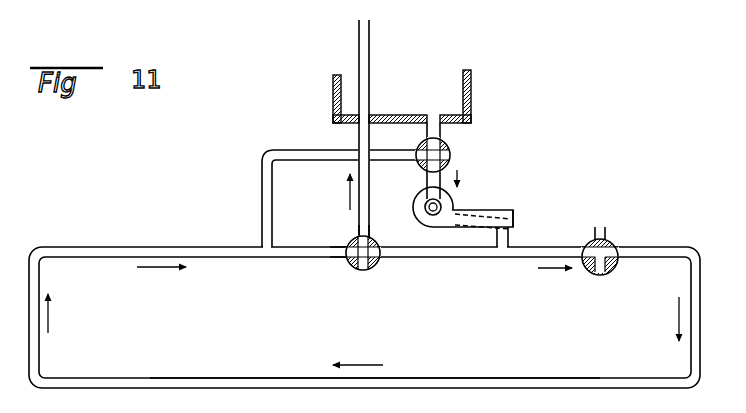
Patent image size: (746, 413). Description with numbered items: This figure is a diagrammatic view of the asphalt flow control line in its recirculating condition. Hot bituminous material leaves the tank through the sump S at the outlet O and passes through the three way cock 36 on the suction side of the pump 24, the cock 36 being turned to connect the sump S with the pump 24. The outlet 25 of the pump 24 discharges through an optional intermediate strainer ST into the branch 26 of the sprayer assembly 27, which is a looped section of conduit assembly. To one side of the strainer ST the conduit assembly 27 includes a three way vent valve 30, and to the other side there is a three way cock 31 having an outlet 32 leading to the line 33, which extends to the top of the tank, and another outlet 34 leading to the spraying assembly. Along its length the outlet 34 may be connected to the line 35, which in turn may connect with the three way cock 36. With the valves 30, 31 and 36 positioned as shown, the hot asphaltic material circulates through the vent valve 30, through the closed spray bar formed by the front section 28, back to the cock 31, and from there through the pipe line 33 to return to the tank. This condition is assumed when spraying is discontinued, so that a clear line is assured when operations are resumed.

The sprayer assembly 27 is at (53, 244).
The front section 28 is at (228, 387).
The line 35 is at (262, 173).
The line 33 is at (359, 48).
The sump S is at (471, 83).
The outlet O is at (428, 117).
The three way cock 36 is at (449, 152).
The pump 24 is at (416, 198).
The strainer ST is at (481, 212).
The outlet 25 is at (513, 210).
The branch 26 is at (509, 236).
The three way cock 31 is at (375, 267).
The outlet 32 is at (367, 237).
The outlet 34 is at (349, 253).
The three way vent valve 30 is at (613, 240).